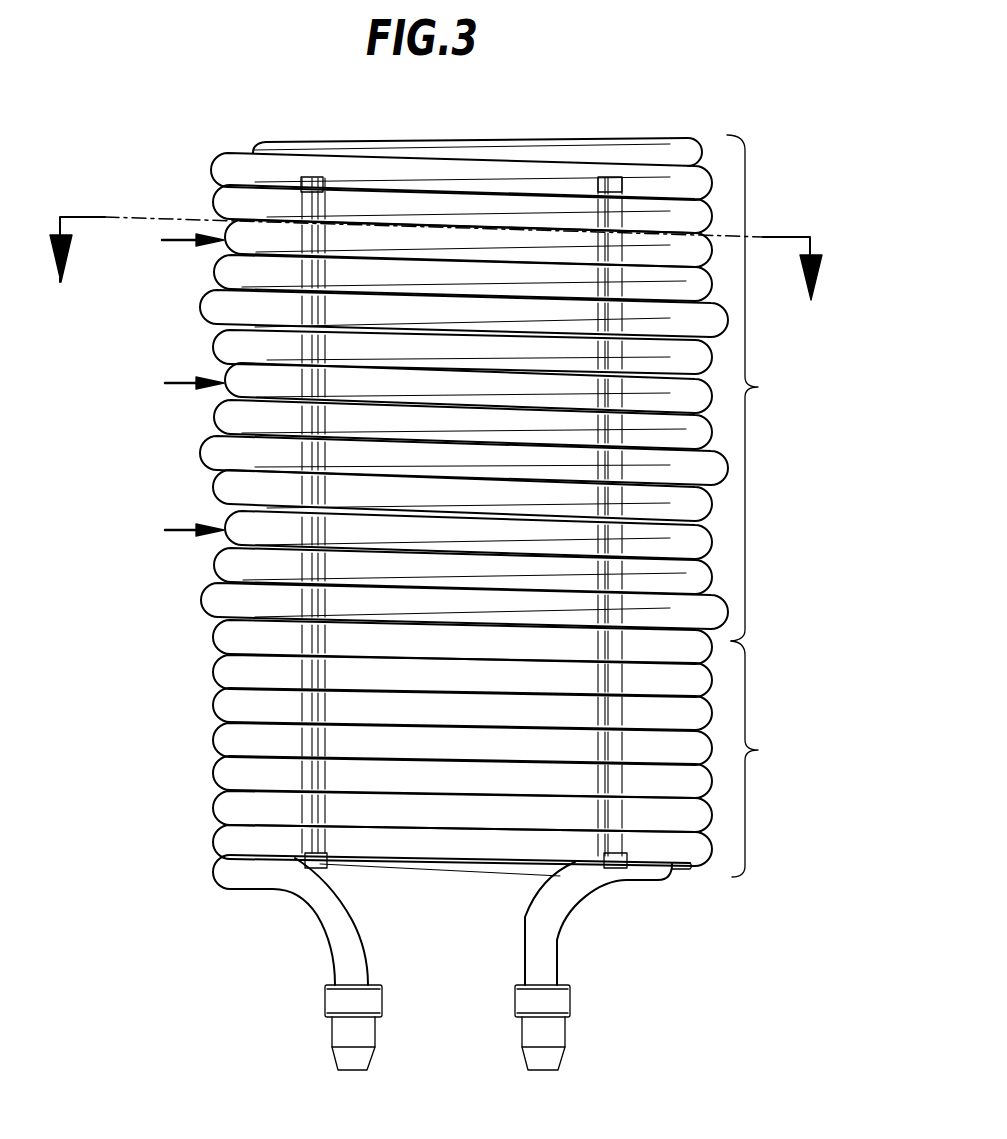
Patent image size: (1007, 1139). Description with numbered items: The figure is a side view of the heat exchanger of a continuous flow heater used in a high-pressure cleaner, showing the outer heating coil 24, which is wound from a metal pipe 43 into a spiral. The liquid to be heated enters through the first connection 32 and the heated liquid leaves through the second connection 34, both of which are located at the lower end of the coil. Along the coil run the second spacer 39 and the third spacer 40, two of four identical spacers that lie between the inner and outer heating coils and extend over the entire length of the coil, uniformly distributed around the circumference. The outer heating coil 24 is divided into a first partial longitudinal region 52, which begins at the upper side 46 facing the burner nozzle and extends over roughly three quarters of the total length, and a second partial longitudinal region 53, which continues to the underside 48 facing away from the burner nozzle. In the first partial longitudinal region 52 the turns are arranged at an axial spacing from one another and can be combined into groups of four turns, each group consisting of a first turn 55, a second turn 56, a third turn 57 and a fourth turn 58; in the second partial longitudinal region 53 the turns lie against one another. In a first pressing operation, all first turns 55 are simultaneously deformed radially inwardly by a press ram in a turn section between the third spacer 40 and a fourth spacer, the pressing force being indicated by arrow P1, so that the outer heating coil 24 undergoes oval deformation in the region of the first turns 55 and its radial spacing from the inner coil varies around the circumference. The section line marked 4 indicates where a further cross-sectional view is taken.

The section line 4- 4 is at (435, 242).
The outer heating coil 24 is at (203, 679).
The first connection 32 is at (553, 1033).
The second connection 34 is at (345, 1033).
The second spacer 39 is at (610, 176).
The third spacer 40 is at (300, 176).
The metal pipe 43 is at (562, 948).
The upper side 46 is at (650, 136).
The underside 48 is at (658, 880).
The first partial longitudinal region 52 is at (450, 400).
The second partial longitudinal region 53 is at (500, 813).
The first turn 55 is at (222, 222).
The second turn 56 is at (216, 285).
The third turn 57 is at (203, 317).
The fourth turn 58 is at (215, 352).
The pressing force P1 is at (172, 247).